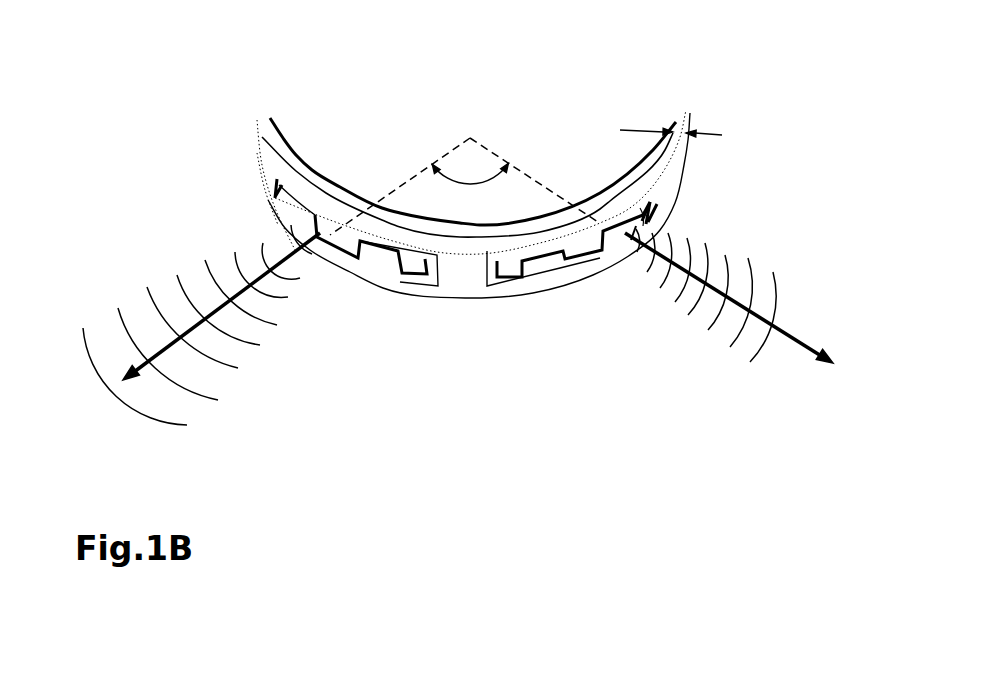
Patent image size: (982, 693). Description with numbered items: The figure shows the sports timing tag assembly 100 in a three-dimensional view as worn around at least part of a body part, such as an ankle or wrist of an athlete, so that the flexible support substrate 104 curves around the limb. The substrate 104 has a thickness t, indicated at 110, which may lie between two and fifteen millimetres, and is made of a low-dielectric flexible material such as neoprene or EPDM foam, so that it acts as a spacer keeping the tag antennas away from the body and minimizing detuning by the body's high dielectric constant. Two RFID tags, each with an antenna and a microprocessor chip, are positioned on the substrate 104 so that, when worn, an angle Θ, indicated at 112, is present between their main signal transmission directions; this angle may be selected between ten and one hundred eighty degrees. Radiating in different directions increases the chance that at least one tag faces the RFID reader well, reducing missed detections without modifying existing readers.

The sports timing tag assembly 100 is at (258, 132).
The flexible support substrate 104 is at (468, 282).
The backing layer of thickness t 110 is at (680, 120).
The angular separation θ 112 is at (455, 150).